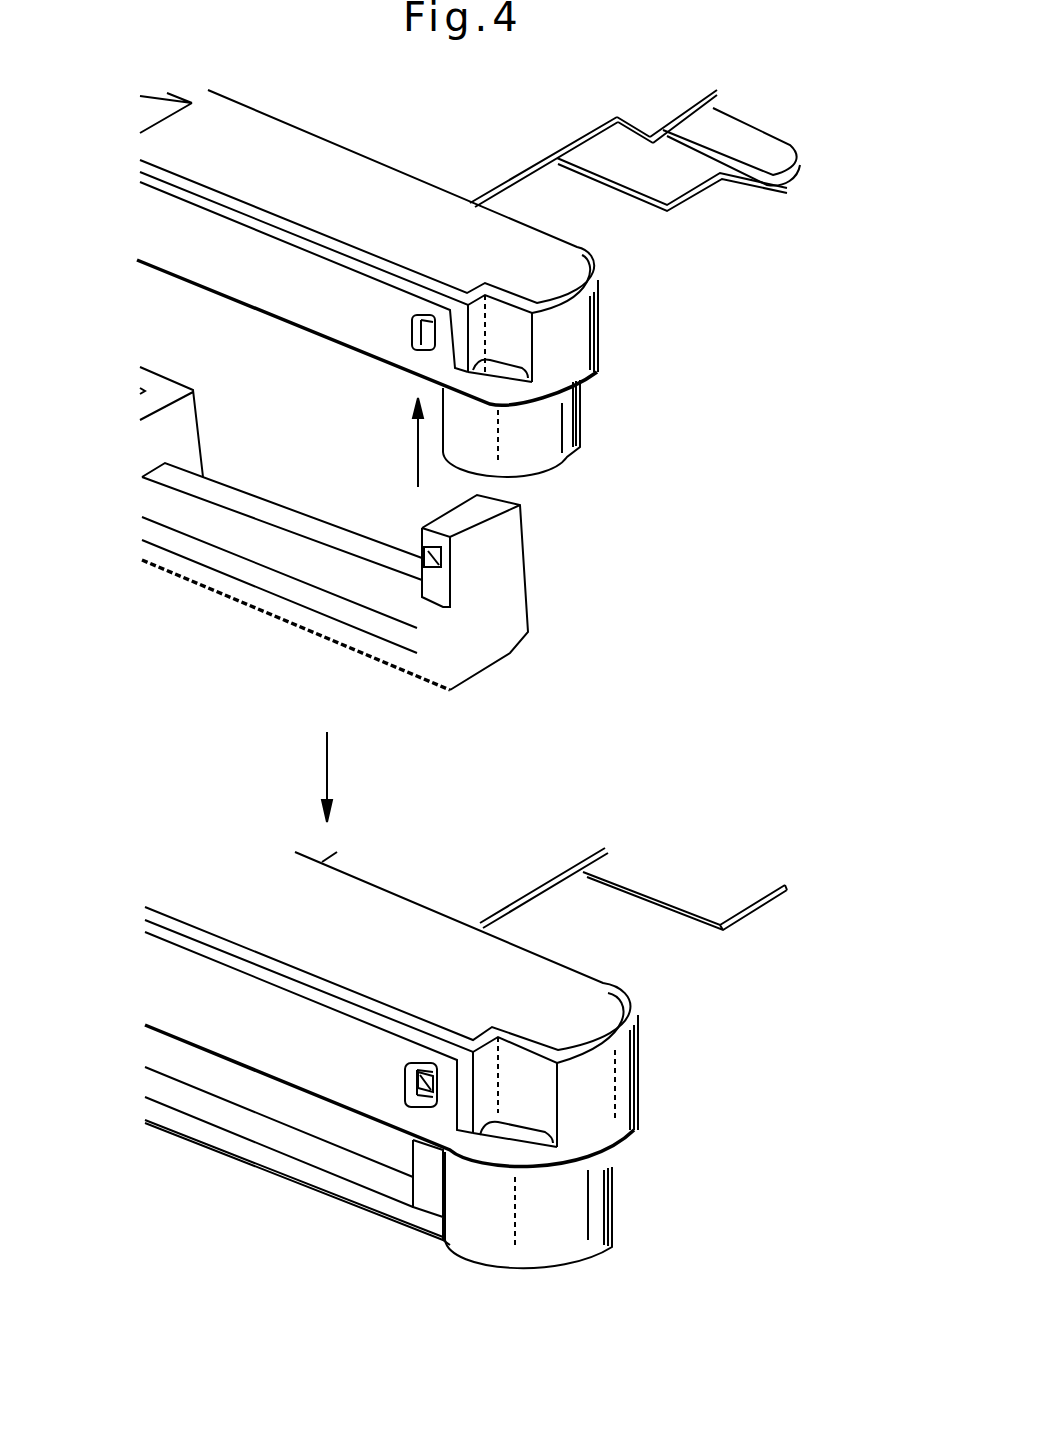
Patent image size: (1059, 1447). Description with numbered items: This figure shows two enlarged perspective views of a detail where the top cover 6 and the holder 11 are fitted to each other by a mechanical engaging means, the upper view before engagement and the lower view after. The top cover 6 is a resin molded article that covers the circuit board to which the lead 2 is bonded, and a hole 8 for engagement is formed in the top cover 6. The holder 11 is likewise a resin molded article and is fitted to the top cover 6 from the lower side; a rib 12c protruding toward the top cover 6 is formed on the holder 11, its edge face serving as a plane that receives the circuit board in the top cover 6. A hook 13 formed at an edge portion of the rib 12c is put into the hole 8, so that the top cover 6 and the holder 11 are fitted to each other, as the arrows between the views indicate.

The lead 2 is at (503, 163).
The top cover 6 is at (598, 313).
The hole 8 is at (435, 337).
The holder 11 is at (303, 617).
The rib 12c is at (513, 573).
The hook 13 is at (443, 567).